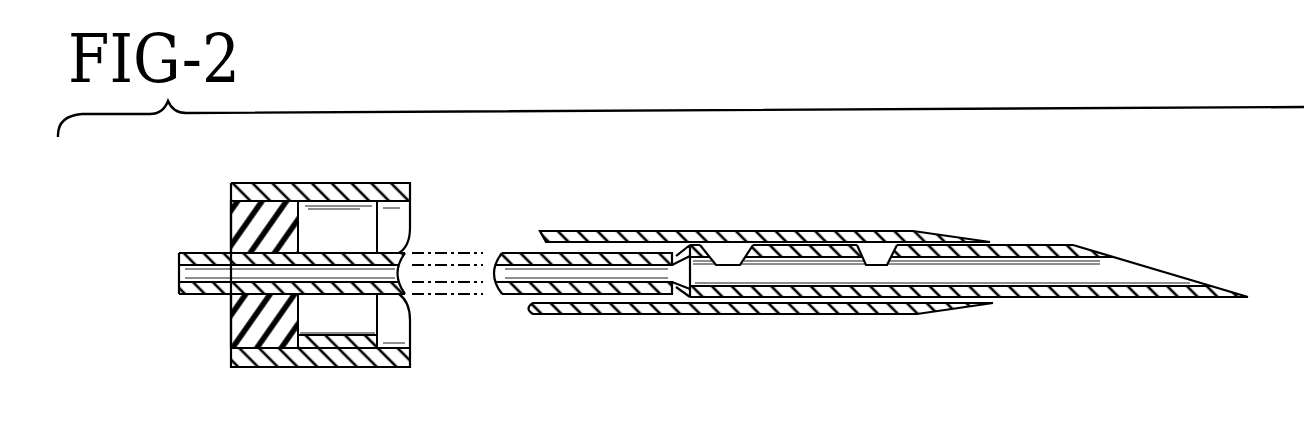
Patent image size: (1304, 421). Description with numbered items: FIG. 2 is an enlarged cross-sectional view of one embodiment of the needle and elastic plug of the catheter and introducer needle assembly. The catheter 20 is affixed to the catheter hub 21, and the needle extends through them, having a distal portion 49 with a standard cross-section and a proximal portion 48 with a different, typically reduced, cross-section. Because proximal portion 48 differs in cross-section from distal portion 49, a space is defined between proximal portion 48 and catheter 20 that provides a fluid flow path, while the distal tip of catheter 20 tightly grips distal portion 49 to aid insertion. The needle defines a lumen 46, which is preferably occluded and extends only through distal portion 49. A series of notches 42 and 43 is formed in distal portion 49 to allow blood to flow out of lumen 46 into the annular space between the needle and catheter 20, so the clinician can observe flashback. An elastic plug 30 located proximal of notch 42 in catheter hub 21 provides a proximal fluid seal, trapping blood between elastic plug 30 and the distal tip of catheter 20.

The catheter 20 is at (767, 317).
The catheter hub 21 is at (330, 183).
The elastic plug 30 is at (240, 230).
The notch 42 is at (873, 255).
The notch 43 is at (730, 255).
The lumen 46 is at (193, 274).
The proximal portion 48 is at (410, 254).
The distal portion 49 is at (1047, 245).